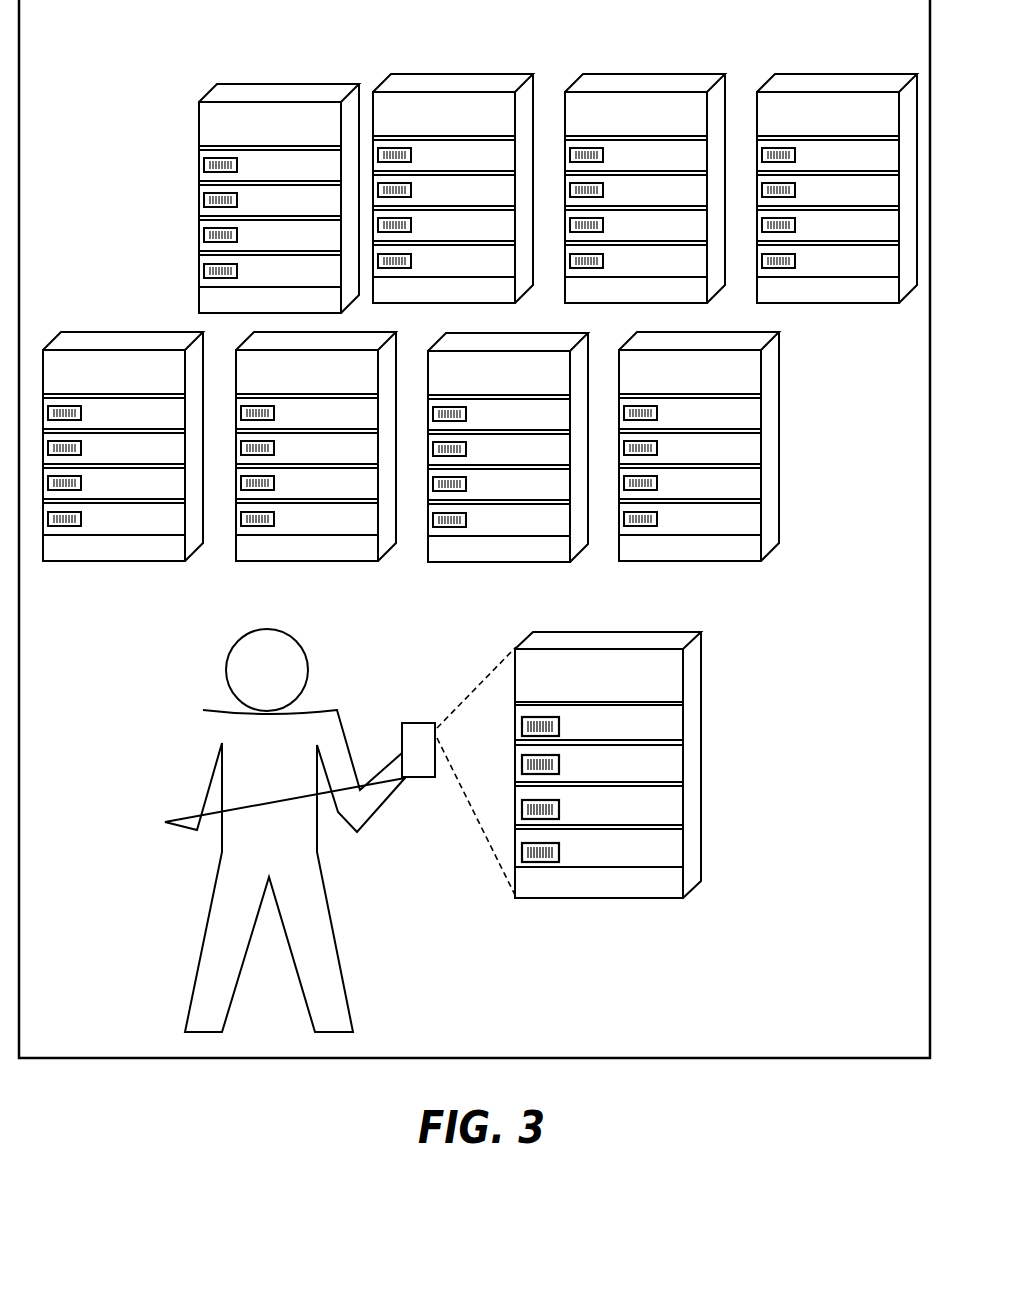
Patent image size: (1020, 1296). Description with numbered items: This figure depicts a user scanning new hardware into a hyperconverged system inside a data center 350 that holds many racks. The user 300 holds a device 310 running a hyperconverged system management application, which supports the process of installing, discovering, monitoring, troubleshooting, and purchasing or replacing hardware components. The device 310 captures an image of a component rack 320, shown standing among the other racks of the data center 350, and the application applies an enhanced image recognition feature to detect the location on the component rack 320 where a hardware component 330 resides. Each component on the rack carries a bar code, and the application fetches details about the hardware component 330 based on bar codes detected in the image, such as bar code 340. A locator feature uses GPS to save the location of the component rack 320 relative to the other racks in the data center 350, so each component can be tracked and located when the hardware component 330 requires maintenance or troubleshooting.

The user 300 is at (204, 664).
The device 310 is at (418, 722).
The component rack 320 is at (690, 794).
The hardware component 330 is at (660, 716).
The bar code 340 is at (668, 791).
The data center 350 is at (148, 80).